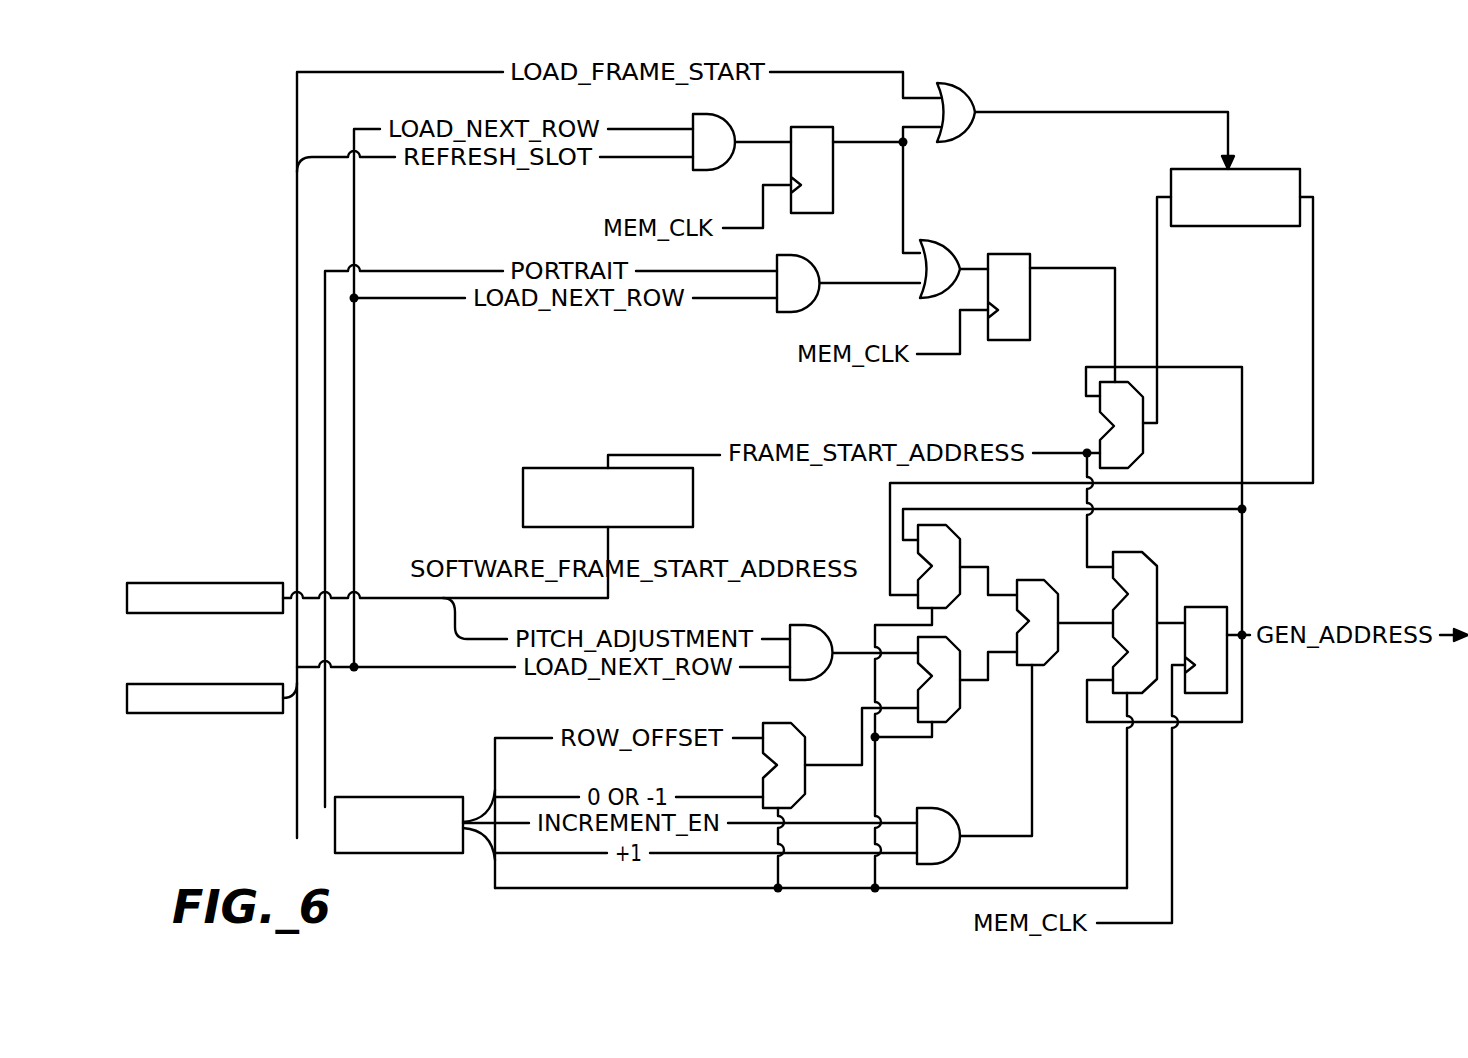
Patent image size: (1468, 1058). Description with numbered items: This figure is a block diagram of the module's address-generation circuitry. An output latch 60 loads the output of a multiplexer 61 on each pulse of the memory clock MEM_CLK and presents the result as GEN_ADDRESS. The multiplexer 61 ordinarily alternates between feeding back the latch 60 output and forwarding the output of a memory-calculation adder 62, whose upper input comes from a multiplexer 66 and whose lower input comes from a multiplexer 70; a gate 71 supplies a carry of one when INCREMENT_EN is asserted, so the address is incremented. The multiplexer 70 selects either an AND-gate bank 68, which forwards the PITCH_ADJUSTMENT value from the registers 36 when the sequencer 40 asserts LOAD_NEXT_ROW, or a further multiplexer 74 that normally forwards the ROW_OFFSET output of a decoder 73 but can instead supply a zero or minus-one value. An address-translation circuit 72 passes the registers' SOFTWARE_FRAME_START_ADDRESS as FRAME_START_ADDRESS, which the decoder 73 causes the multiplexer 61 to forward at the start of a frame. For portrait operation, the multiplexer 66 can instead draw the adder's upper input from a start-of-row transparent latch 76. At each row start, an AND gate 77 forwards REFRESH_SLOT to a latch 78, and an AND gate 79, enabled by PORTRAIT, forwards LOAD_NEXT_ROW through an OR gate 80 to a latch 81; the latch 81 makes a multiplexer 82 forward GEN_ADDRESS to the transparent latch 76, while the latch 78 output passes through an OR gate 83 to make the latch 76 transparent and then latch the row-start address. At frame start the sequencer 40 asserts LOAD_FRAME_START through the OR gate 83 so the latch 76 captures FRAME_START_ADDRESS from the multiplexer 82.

The registers 36 is at (200, 583).
The sequencer 40 is at (198, 684).
The latch 60 is at (1220, 607).
The multiplexer 61 is at (1128, 552).
The memory-calculation adder 62 is at (1023, 580).
The multiplexer 66 is at (960, 543).
The AND-gate bank 68 is at (817, 627).
The multiplexer 70 is at (940, 637).
The gate 71 is at (945, 808).
The address-translation circuit 72 is at (580, 468).
The decoder 73 is at (382, 797).
The multiplexer 74 is at (777, 723).
The transparent latch 76 is at (1267, 168).
The AND gate 77 is at (700, 171).
The latch 78 is at (833, 175).
The AND gate 79 is at (790, 255).
The OR gate 80 is at (927, 240).
The latch 81 is at (1008, 253).
The multiplexer 82 is at (1143, 427).
The OR gate 83 is at (957, 83).